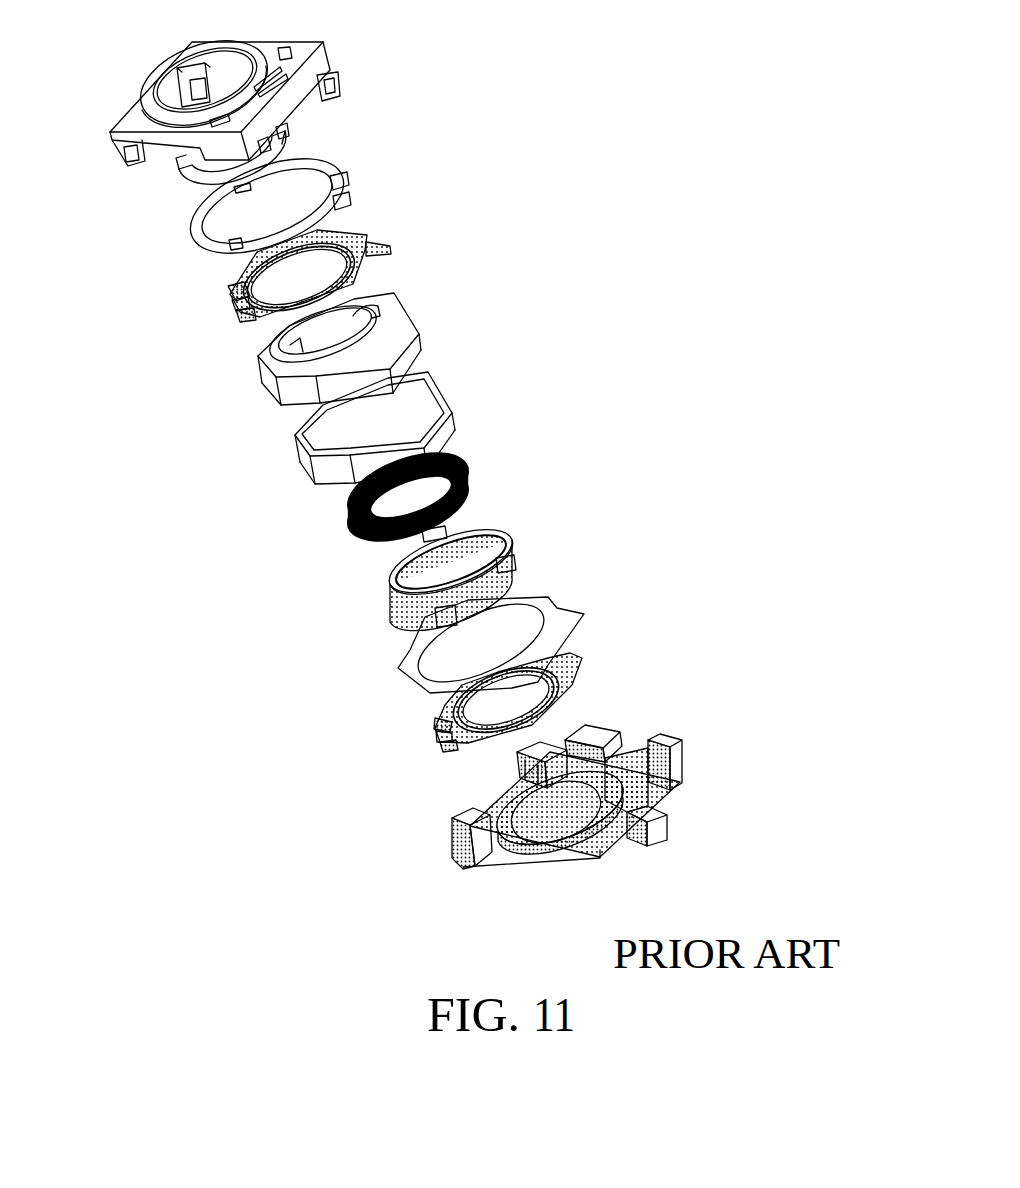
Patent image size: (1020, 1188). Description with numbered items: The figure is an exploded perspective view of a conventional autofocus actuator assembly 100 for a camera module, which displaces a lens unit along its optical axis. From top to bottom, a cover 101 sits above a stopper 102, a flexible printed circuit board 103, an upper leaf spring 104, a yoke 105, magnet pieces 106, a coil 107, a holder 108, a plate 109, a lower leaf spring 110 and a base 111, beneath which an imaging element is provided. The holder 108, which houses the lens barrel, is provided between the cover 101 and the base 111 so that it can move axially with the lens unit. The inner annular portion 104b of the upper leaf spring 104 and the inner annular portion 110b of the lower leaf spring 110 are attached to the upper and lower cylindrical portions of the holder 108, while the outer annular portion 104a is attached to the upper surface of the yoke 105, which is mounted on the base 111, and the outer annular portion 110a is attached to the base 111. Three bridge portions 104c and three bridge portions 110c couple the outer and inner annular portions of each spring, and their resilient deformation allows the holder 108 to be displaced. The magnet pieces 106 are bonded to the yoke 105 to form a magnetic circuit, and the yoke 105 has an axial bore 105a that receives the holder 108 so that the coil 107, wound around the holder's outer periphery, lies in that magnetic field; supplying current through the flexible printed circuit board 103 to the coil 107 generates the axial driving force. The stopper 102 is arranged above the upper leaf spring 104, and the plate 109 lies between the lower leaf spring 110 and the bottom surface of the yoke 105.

The autofocus actuator assembly 100 is at (535, 172).
The cover 101 is at (318, 64).
The stopper 102 is at (181, 178).
The flexible printed circuit board 103 is at (338, 173).
The upper leaf spring 104 is at (295, 293).
The outer annular portion 104a is at (237, 323).
The inner annular portion 104b is at (228, 286).
The bridge portions 104c is at (228, 304).
The yoke 105 is at (394, 313).
The axial bore 105a is at (382, 303).
The magnet pieces 106 is at (447, 397).
The coil 107 is at (470, 473).
The holder 108 is at (512, 552).
The plate 109 is at (567, 612).
The lower leaf spring 110 is at (489, 719).
The outer annular portion 110a is at (452, 748).
The inner annular portion 110b is at (437, 723).
The bridge portions 110c is at (440, 740).
The base 111 is at (680, 752).